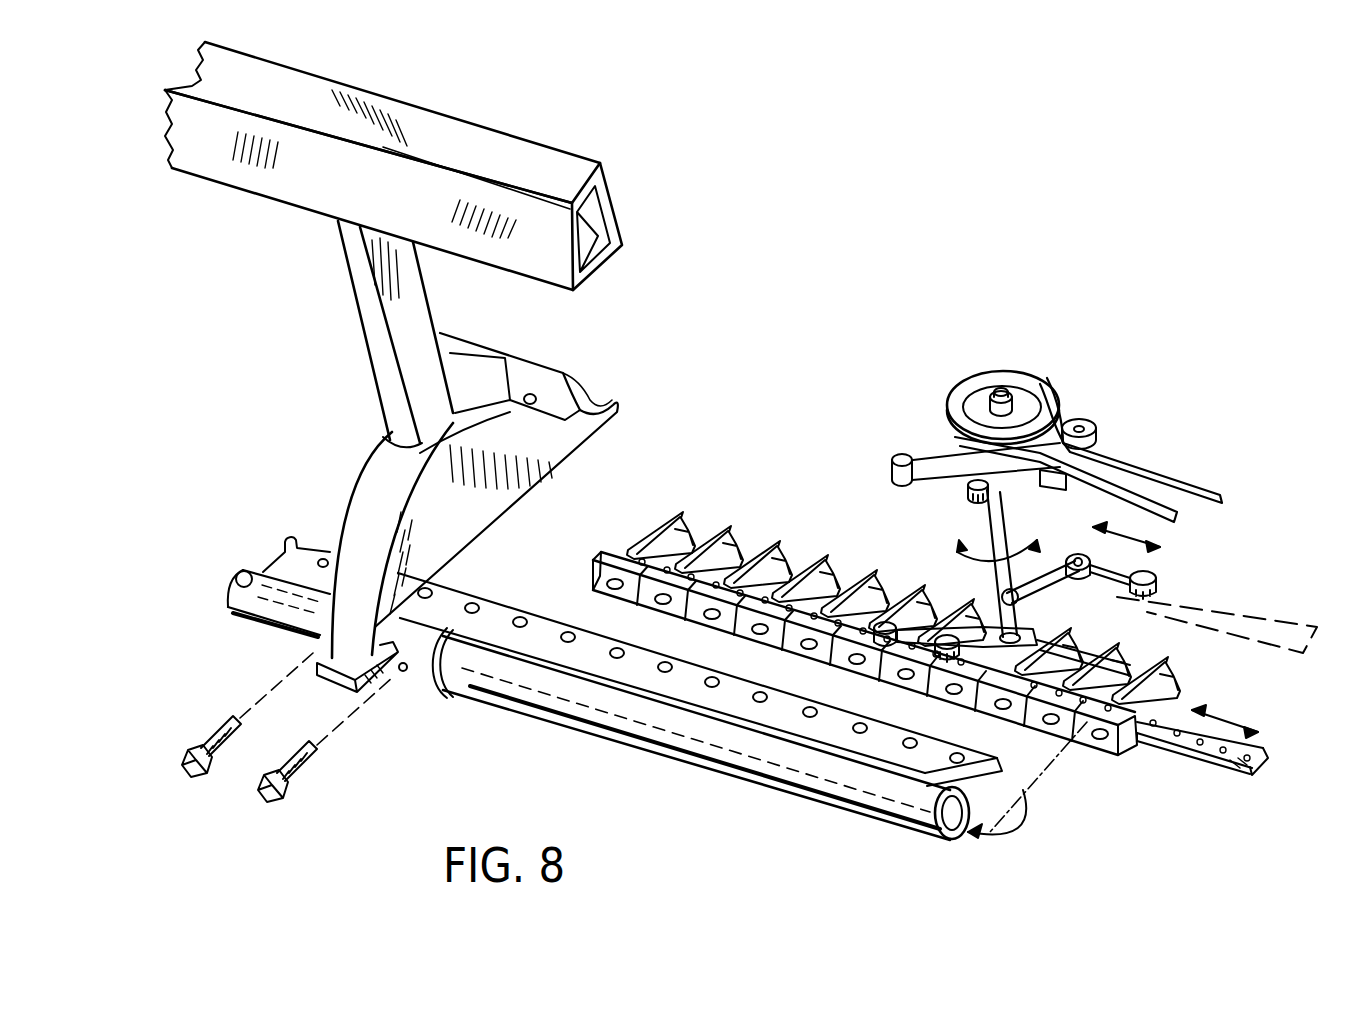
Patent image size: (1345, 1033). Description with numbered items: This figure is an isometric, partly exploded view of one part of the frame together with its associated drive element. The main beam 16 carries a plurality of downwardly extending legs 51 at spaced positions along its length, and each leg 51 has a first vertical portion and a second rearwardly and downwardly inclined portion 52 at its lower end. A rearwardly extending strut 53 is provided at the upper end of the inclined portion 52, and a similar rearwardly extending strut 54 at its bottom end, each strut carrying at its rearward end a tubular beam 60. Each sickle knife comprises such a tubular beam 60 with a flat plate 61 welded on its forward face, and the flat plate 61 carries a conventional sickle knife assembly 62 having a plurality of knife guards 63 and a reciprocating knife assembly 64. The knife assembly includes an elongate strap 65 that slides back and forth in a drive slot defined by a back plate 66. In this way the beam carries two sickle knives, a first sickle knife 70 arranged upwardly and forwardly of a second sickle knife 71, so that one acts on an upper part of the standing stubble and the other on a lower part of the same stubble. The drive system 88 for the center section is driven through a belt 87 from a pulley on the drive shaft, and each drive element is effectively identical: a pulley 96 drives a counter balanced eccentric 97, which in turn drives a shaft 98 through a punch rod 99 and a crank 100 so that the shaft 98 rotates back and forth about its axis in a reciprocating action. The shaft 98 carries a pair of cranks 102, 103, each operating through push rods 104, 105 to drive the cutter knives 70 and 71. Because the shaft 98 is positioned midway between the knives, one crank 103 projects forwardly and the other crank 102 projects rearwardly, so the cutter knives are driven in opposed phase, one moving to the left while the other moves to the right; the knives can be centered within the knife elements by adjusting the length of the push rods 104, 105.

The beam 16 is at (500, 133).
The leg 51 is at (365, 290).
The inclined portion 52 is at (345, 498).
The strut 53 is at (390, 441).
The strut 54 is at (487, 513).
The tubular beam 60 is at (620, 737).
The flat plate 61 is at (590, 647).
The sickle knife assembly 62 is at (886, 600).
The knife guards 63 is at (670, 512).
The reciprocating knife assembly 64 is at (714, 528).
The elongate strap 65 is at (1203, 740).
The back plate 66 is at (600, 565).
The first sickle knife 70 is at (1250, 598).
The second sickle knife 71 is at (1197, 689).
The belt 87 is at (1137, 468).
The drive system 88 is at (1040, 439).
The pulley 96 is at (982, 383).
The counter balanced eccentric 97 is at (1060, 483).
The shaft 98 is at (997, 523).
The punch rod 99 is at (947, 490).
The crank 100 is at (938, 462).
The crank 102 is at (990, 650).
The crank 103 is at (1047, 583).
The push rod 104 is at (935, 612).
The push rod 105 is at (1128, 560).